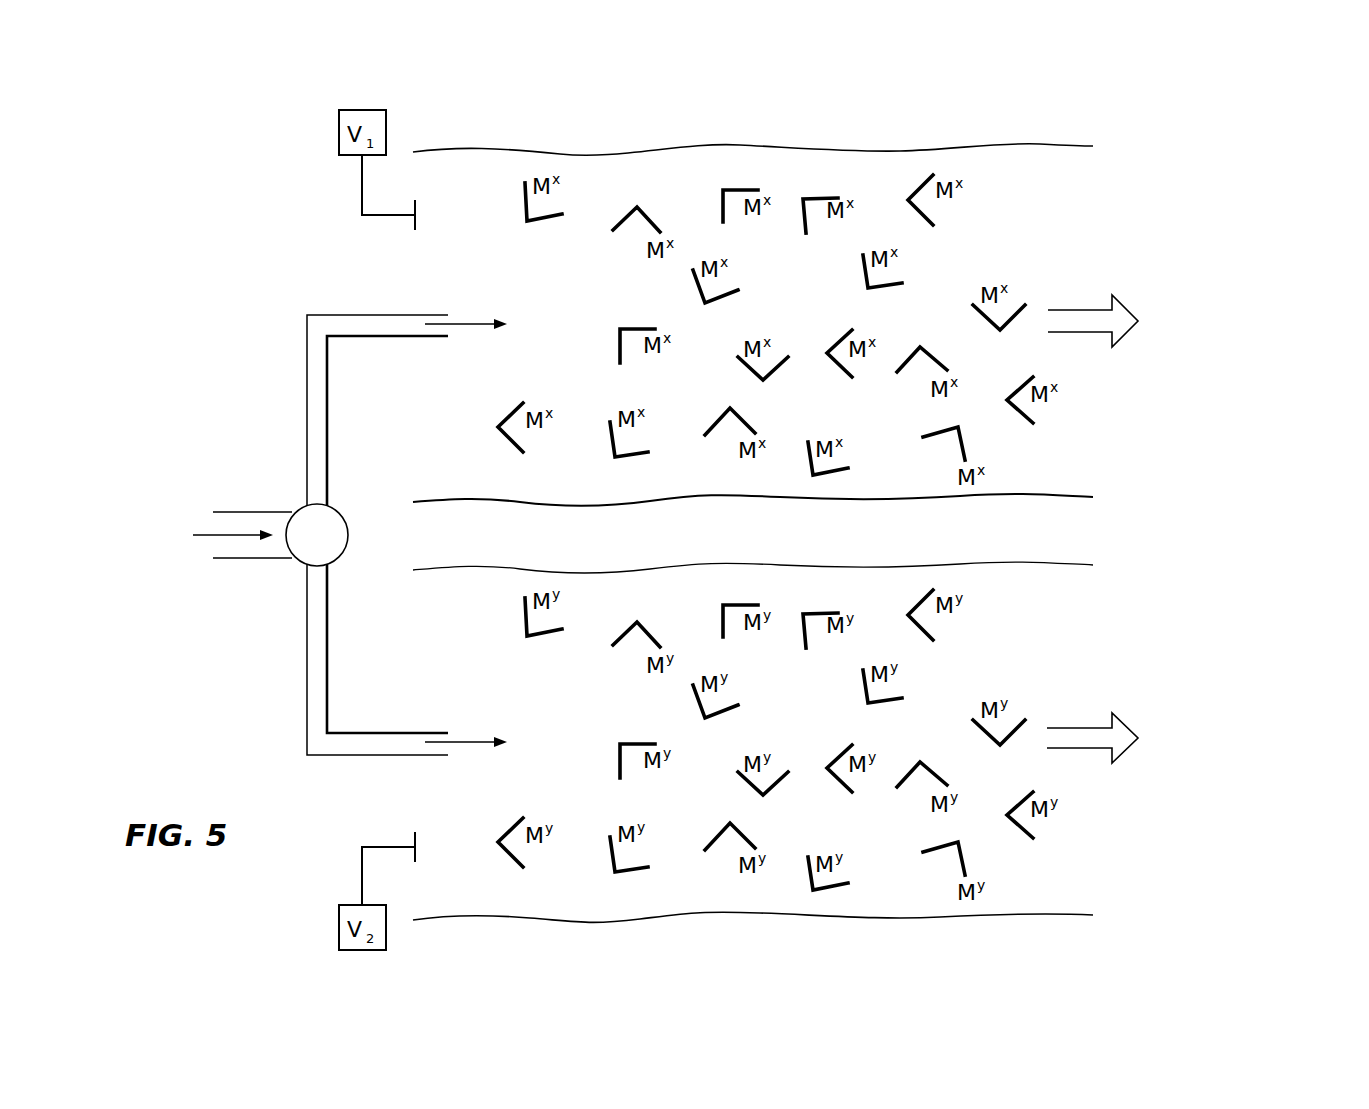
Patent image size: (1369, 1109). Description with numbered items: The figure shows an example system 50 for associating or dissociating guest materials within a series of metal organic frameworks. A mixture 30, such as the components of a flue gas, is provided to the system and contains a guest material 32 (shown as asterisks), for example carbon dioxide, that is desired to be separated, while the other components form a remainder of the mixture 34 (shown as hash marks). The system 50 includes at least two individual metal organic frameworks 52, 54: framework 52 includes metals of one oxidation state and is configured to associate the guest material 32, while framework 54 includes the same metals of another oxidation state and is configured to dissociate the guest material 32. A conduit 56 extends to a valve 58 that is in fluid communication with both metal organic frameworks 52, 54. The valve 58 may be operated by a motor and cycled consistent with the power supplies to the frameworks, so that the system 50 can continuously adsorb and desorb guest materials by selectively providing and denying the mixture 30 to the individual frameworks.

The mixture 30 is at (148, 458).
The guest material 32 is at (683, 194).
The remainder of the mixture 34 is at (1274, 320).
The system 50 is at (1236, 128).
The metal organic framework 52 is at (822, 168).
The metal organic framework 54 is at (730, 900).
The conduit 56 is at (317, 425).
The valve 58 is at (345, 522).